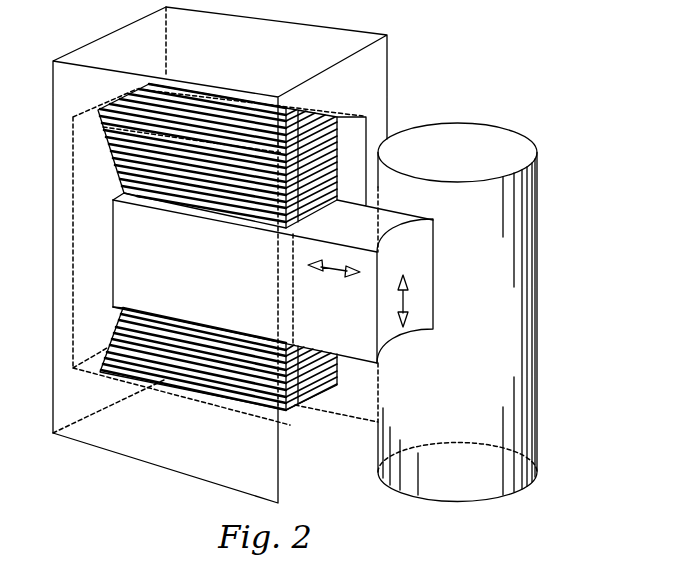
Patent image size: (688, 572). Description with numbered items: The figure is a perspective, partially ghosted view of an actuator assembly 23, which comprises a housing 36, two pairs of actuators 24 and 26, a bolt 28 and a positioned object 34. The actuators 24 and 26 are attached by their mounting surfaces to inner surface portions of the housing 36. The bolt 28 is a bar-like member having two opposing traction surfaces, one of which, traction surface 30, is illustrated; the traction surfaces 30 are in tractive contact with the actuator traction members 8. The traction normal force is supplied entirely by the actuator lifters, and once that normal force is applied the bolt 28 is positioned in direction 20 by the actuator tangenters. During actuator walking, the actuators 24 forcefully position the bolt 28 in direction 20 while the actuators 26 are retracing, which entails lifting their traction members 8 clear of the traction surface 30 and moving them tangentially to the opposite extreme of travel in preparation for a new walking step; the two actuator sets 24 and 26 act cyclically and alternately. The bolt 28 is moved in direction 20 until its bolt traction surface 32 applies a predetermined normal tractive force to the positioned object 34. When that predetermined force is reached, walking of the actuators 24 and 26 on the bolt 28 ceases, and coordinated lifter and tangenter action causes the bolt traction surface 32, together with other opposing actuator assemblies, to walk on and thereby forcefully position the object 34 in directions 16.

The actuator traction members 8 is at (148, 203).
The directions 16 is at (407, 303).
The direction 20 is at (338, 273).
The actuator assembly 23 is at (426, 53).
The actuators 24 is at (112, 103).
The actuators 26 is at (127, 97).
The bolt 28 is at (122, 280).
The traction surface 30 is at (332, 218).
The bolt traction surface 32 is at (420, 252).
The positioned object 34 is at (497, 137).
The housing 36 is at (392, 119).